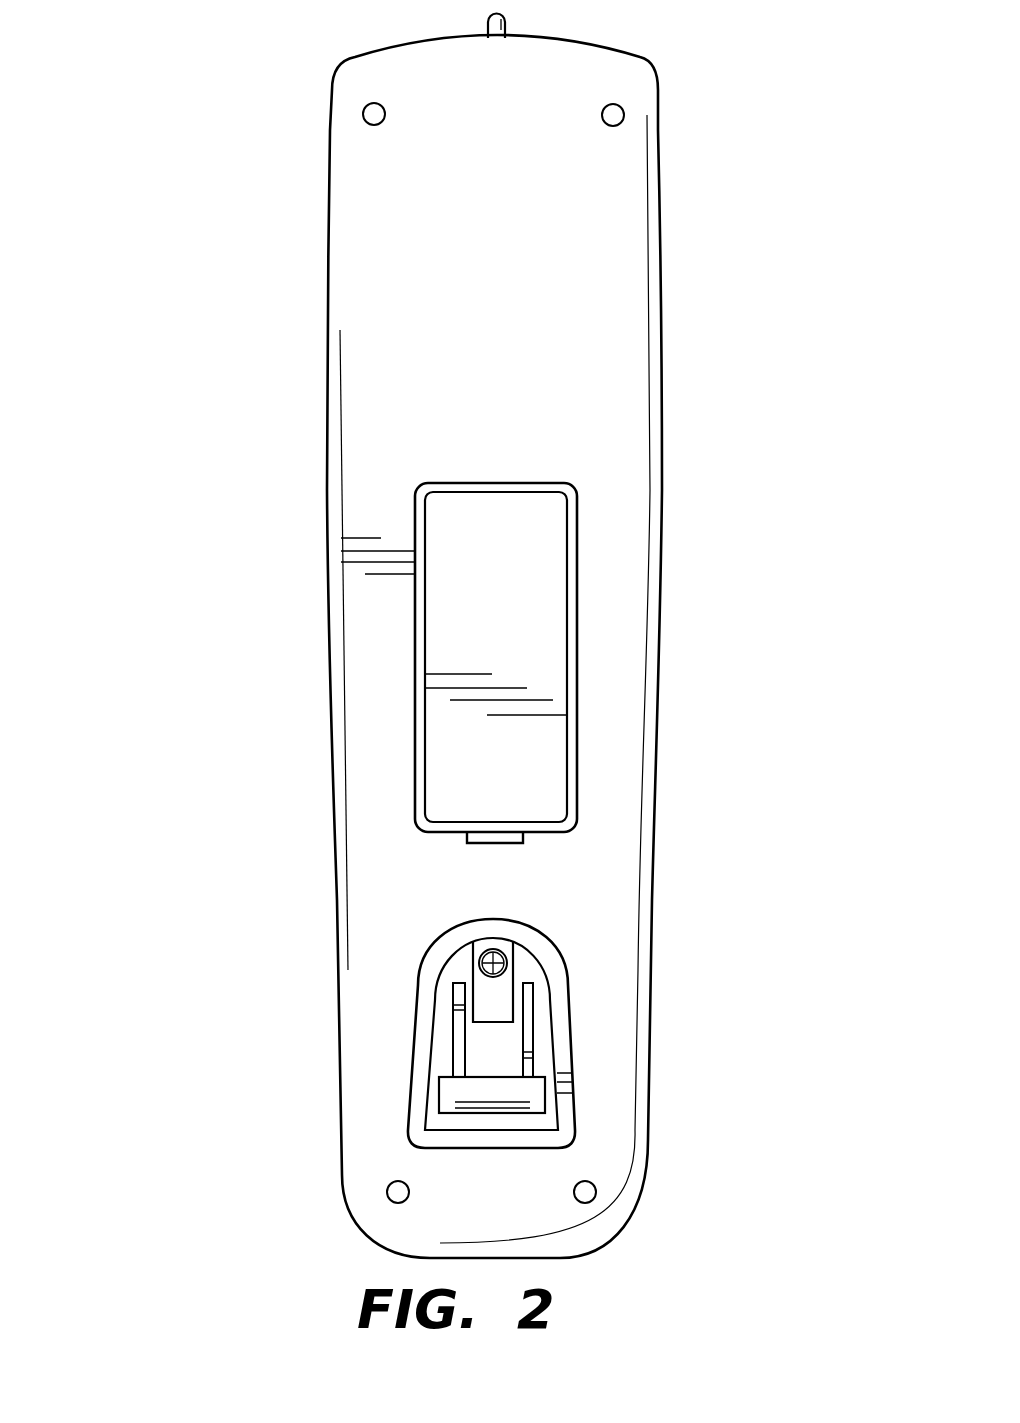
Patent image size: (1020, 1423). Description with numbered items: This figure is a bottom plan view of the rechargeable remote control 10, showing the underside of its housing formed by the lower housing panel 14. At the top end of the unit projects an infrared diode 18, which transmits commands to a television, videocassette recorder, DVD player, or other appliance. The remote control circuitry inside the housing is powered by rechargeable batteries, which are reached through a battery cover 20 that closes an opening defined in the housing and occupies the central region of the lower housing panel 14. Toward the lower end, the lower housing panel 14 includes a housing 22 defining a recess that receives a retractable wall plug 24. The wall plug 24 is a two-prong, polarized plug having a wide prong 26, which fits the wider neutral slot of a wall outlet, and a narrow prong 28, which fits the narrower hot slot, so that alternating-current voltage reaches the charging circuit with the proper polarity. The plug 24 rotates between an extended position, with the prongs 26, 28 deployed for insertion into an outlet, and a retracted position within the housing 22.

The rechargeable remote control 10 is at (245, 478).
The lower housing panel 14 is at (575, 258).
The infrared diode 18 is at (507, 25).
The battery cover 20 is at (530, 563).
The housing 22 is at (407, 1078).
The retractable wall plug 24 is at (540, 1097).
The wide prong 26 is at (453, 1032).
The narrow prong 28 is at (533, 1025).